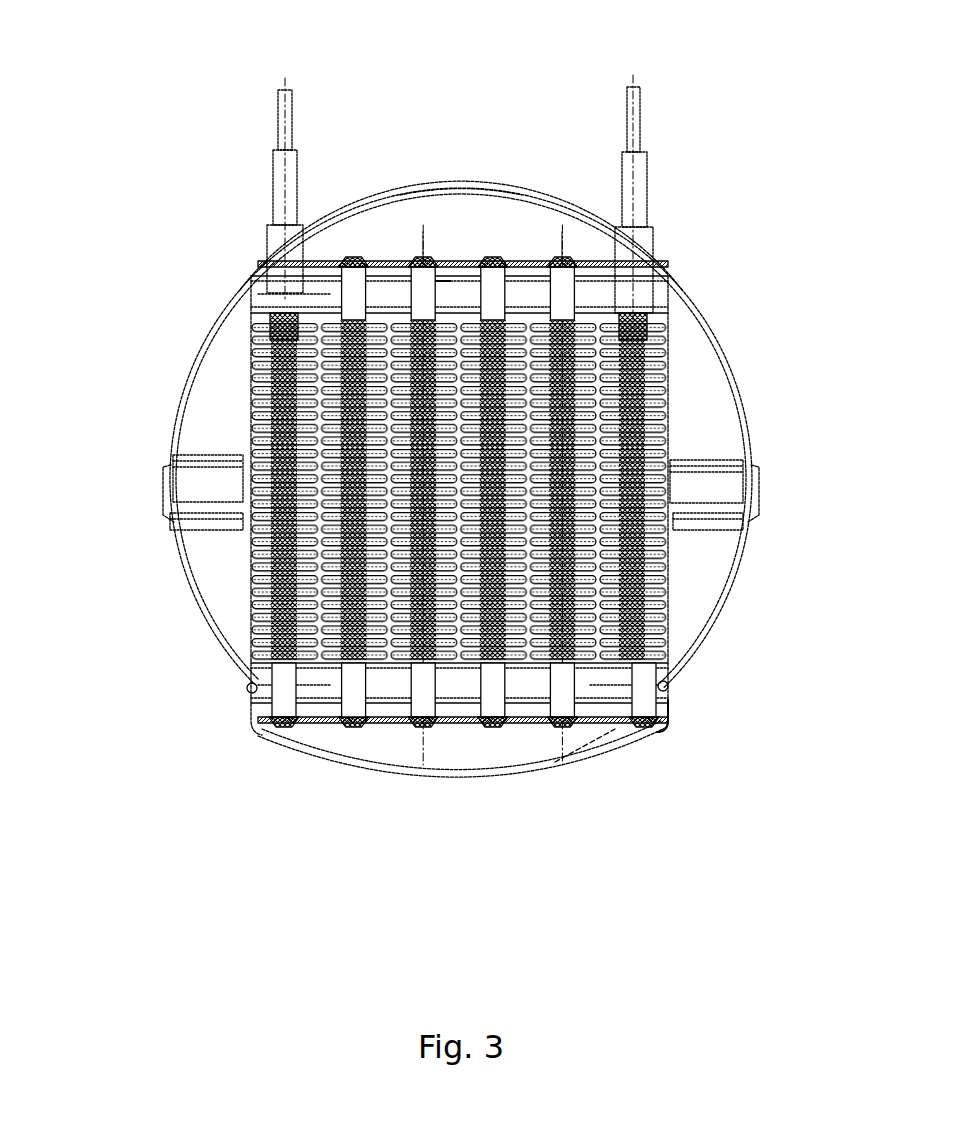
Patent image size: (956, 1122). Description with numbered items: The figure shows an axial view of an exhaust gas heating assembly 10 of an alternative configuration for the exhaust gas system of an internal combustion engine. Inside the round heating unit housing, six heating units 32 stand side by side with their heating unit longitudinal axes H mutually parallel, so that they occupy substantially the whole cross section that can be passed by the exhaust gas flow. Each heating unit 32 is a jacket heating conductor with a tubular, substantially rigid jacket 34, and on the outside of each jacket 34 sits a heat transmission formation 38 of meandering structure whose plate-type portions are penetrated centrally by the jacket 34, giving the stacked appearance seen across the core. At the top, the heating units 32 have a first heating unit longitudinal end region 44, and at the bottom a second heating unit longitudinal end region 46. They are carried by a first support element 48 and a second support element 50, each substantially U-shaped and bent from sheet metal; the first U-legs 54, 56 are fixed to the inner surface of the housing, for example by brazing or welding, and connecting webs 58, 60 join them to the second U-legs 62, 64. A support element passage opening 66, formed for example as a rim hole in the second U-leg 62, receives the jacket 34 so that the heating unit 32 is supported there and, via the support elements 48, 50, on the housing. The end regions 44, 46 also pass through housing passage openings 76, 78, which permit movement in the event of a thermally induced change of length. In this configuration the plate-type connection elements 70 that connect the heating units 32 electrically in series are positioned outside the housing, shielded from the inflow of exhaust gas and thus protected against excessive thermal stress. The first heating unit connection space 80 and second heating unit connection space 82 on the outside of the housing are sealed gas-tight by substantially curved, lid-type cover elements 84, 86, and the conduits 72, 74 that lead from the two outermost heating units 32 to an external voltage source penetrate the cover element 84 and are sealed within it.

The exhaust gas heating assembly 10 is at (698, 118).
The heating unit 32 is at (339, 646).
The jacket 34 is at (505, 688).
The heat transmission formation 38 is at (670, 410).
The first heating unit longitudinal end region 44 is at (333, 257).
The second heating unit longitudinal end region 46 is at (488, 745).
The first support element 48 is at (668, 298).
The second support element 50 is at (248, 687).
The first U-leg 54 is at (605, 288).
The first U-leg 56 is at (668, 690).
The connecting web 58 is at (317, 293).
The connecting web 60 is at (307, 681).
The second U-leg 62 is at (672, 332).
The second U-leg 64 is at (595, 705).
The support element passage opening 66 is at (325, 310).
The connection element 70 is at (376, 265).
The conduit 72 is at (260, 236).
The conduit 74 is at (660, 228).
The housing passage opening 76 is at (438, 277).
The housing passage opening 78 is at (395, 738).
The first heating unit connection space 80 is at (400, 227).
The second heating unit connection space 82 is at (400, 748).
The cover element 84 is at (540, 203).
The cover element 86 is at (557, 750).
The heating unit longitudinal axis H is at (427, 228).